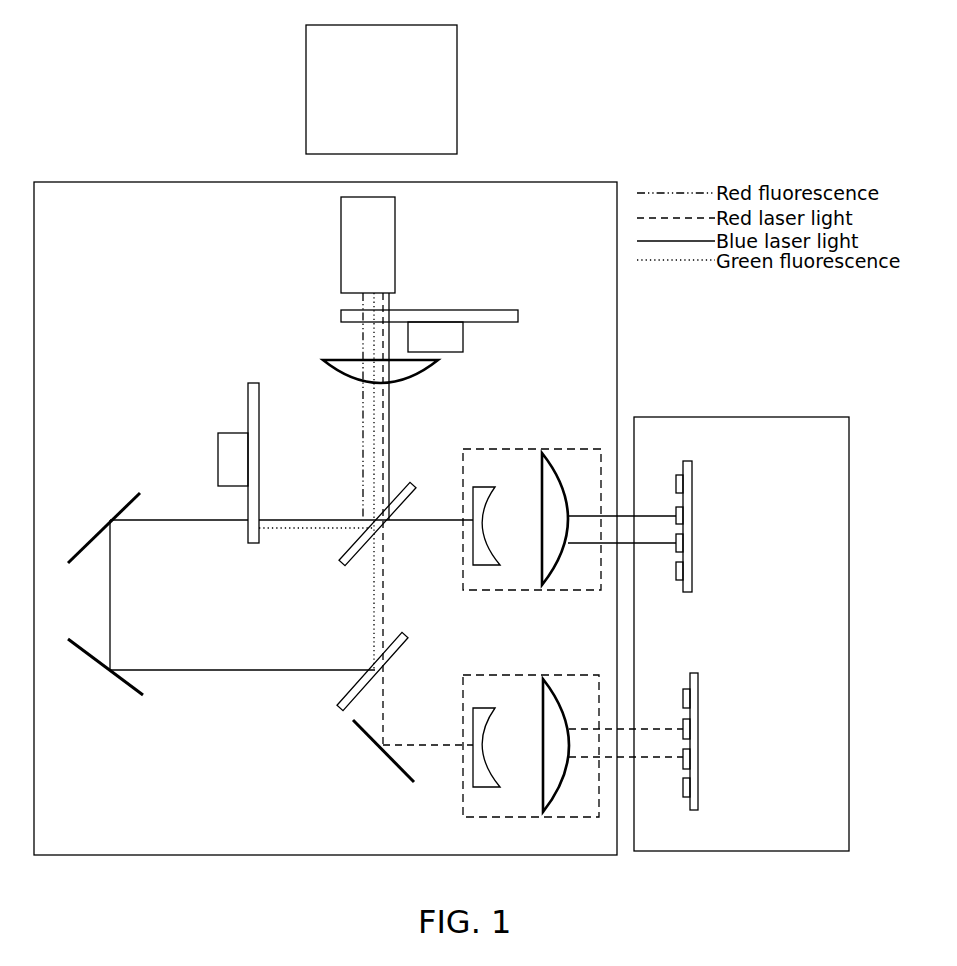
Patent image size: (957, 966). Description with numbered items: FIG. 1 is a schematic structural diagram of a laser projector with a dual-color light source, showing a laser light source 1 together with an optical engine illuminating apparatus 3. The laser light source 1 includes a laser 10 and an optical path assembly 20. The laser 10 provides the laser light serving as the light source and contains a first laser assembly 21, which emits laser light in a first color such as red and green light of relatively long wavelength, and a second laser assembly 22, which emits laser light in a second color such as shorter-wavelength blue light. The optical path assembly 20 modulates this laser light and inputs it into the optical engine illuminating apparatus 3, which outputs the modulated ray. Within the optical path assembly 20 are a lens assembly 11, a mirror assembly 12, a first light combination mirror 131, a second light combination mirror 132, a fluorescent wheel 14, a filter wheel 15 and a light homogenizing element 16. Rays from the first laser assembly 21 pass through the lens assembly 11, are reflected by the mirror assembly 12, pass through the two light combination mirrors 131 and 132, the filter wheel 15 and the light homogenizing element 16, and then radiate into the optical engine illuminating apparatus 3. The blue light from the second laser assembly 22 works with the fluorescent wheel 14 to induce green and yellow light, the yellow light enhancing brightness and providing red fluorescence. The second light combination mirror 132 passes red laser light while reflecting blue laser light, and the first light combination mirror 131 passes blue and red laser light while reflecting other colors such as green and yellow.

The laser light source 1 is at (747, 417).
The optical engine illuminating apparatus 3 is at (375, 99).
The laser 10 is at (732, 442).
The lens assembly 11 is at (438, 360).
The mirror assembly 12 is at (133, 500).
The fluorescent wheel 14 is at (248, 408).
The filter wheel 15 is at (518, 315).
The light homogenizing element 16 is at (394, 256).
The optical path assembly 20 is at (38, 207).
The first laser assembly 21 is at (698, 737).
The second laser assembly 22 is at (692, 557).
The first light combination mirror 131 is at (413, 483).
The second light combination mirror 132 is at (405, 650).